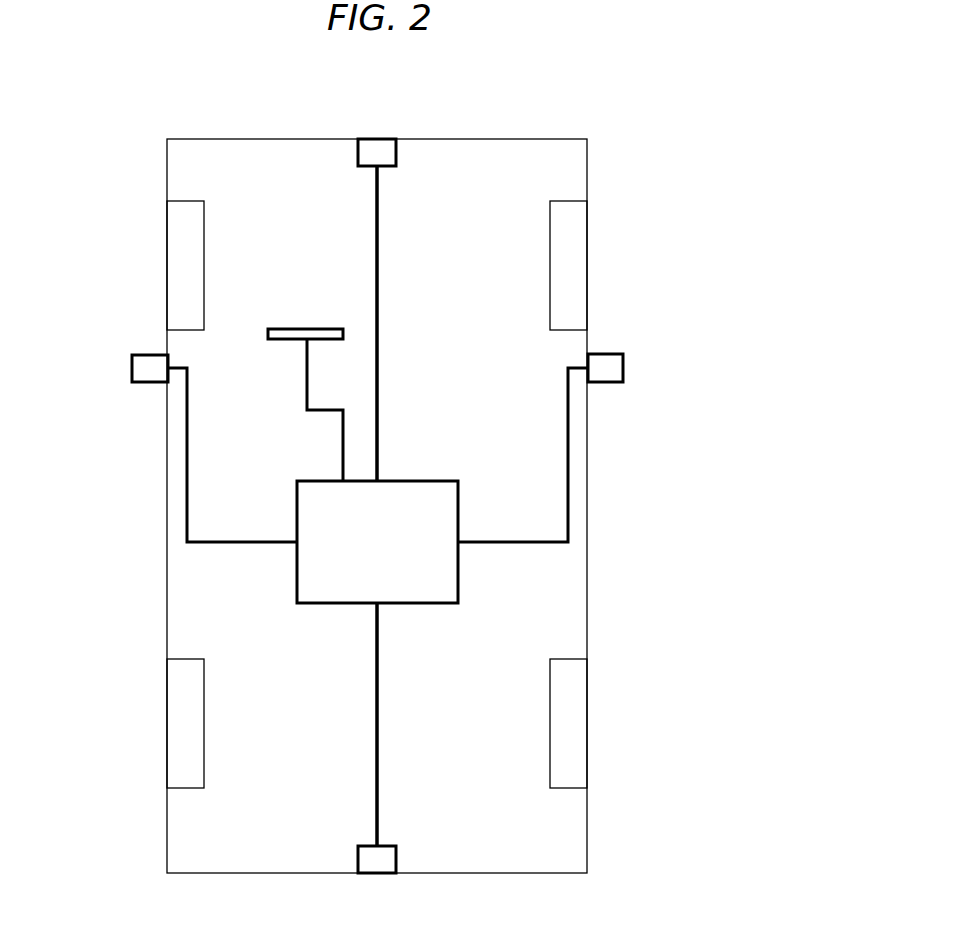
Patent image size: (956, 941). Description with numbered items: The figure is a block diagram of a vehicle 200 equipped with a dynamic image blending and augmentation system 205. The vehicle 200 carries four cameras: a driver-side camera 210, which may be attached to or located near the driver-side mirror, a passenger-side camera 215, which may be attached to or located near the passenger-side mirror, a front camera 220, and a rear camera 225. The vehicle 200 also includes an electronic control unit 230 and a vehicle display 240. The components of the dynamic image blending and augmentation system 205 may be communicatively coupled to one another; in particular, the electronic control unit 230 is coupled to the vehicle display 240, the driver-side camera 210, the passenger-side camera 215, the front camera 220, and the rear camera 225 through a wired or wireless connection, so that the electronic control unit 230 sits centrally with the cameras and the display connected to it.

The vehicle 200 is at (587, 180).
The dynamic image blending and augmentation system 205 is at (663, 497).
The driver-side camera 210 is at (132, 368).
The passenger-side camera 215 is at (623, 368).
The front camera 220 is at (390, 139).
The rear camera 225 is at (365, 873).
The electronic control unit 230 is at (458, 592).
The vehicle display 240 is at (287, 339).